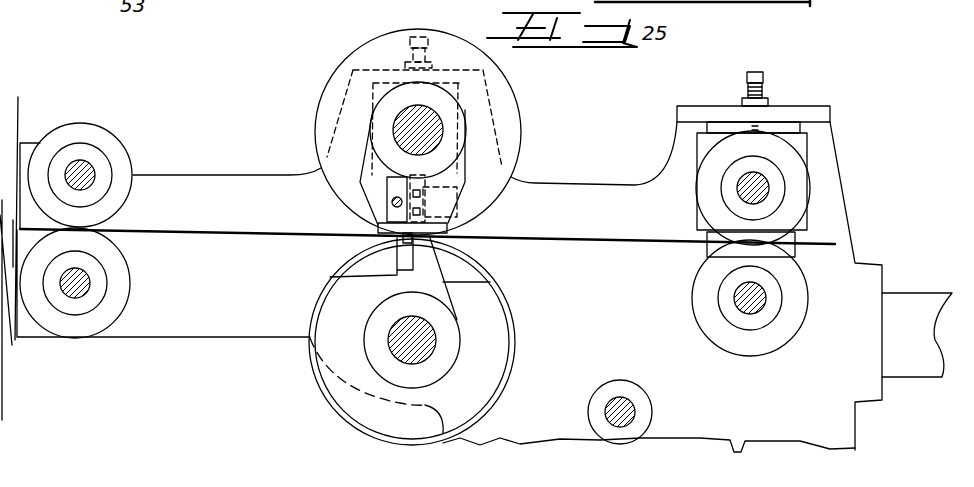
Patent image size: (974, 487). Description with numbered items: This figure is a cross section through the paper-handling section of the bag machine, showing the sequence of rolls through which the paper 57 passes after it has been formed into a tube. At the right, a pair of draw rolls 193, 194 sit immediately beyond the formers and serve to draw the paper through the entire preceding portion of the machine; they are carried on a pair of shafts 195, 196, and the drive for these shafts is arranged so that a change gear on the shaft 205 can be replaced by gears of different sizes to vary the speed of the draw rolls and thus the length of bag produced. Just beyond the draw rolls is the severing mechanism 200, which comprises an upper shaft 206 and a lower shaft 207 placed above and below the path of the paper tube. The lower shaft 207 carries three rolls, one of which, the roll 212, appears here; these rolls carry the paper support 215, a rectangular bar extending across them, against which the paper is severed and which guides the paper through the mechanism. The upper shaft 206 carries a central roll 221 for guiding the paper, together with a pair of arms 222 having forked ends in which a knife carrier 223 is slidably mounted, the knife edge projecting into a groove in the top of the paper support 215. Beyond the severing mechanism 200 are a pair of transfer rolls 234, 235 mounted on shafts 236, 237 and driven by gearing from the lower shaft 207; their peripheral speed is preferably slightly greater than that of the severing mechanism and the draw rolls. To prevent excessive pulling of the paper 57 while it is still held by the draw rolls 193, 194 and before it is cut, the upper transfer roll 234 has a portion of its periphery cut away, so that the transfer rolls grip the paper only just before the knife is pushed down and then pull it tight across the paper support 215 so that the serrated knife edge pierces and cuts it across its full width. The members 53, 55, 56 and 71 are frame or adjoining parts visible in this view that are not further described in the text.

The frame member 53 is at (210, 317).
The frame member 55 is at (925, 7).
The belt / strip upper run 56 is at (180, 230).
The paper 57 is at (237, 230).
The frame member 71 is at (887, 13).
The draw roll 193 is at (793, 188).
The draw roll 194 is at (793, 280).
The draw roll shaft 195 is at (763, 178).
The lower draw roll shaft 196 is at (757, 305).
The severing mechanism 200 is at (517, 103).
The shaft 205 is at (635, 413).
The upper shaft 206 is at (437, 138).
The lower shaft 207 is at (395, 322).
The roll 212 is at (317, 377).
The paper support 215 is at (407, 253).
The central roll 221 is at (323, 92).
The arm 222 is at (373, 195).
The knife carrier 223 is at (390, 208).
The upper transfer roll 234 is at (127, 147).
The transfer roll 235 is at (103, 317).
The shaft 236 is at (72, 163).
The shaft 237 is at (80, 297).